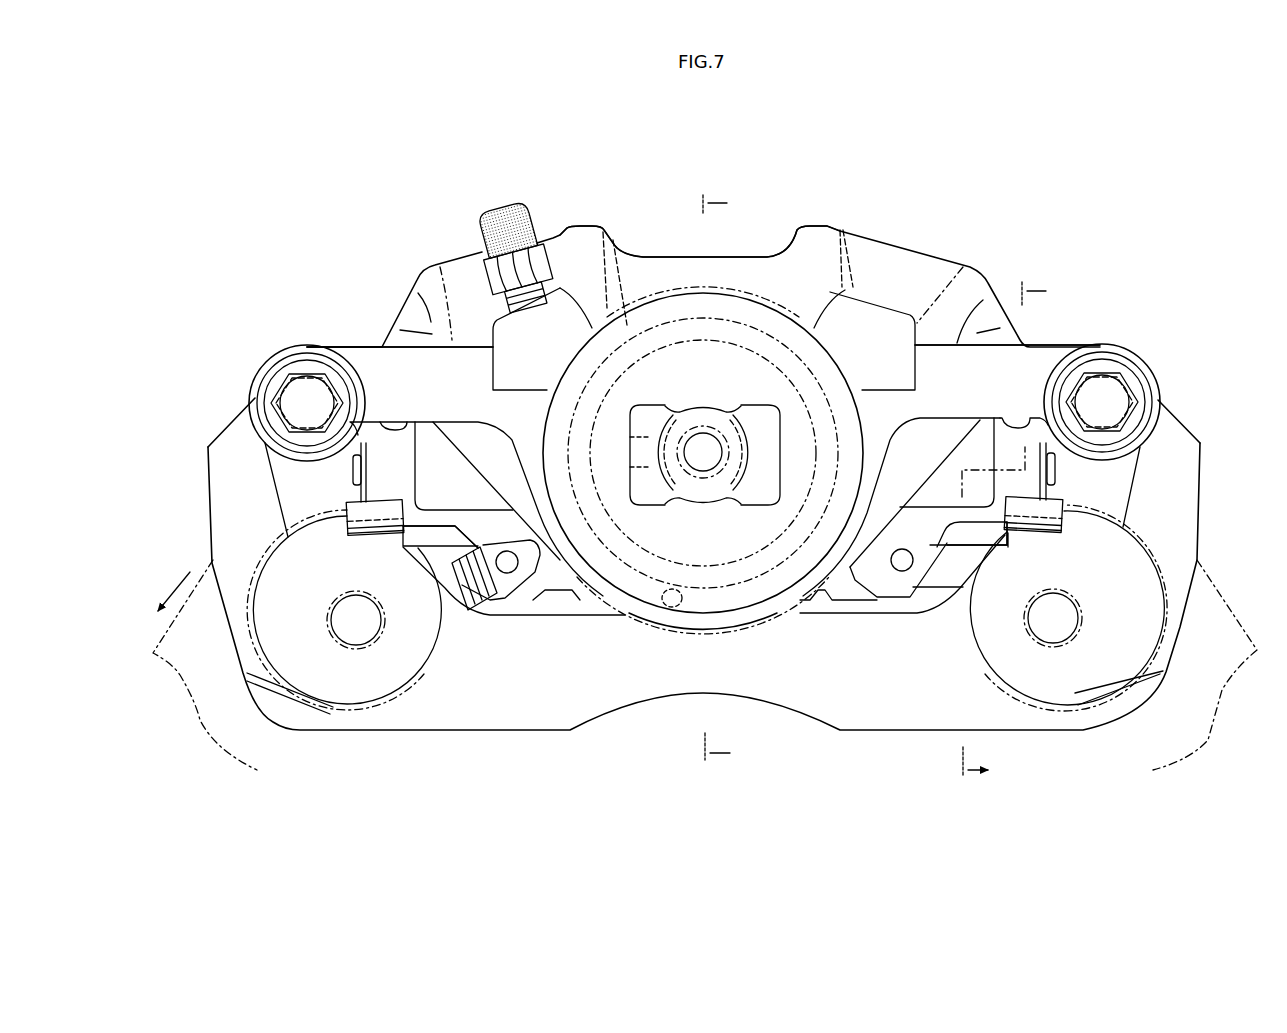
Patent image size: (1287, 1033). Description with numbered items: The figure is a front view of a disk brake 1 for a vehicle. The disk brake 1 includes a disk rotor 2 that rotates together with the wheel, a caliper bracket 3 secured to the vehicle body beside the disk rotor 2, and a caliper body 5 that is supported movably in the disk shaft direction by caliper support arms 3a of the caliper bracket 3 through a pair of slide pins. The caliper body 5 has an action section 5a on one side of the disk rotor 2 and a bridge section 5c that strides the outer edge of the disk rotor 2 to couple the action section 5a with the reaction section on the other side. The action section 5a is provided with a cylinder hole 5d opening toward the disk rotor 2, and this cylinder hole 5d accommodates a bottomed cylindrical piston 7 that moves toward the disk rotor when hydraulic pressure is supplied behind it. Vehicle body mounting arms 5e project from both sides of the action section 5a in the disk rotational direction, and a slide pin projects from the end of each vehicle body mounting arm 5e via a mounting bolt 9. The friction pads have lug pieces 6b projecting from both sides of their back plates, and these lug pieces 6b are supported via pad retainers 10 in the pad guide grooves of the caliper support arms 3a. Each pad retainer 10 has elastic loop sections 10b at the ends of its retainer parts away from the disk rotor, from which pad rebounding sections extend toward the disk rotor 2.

The disk brake 1 is at (714, 157).
The disk rotor 2 is at (1217, 583).
The caliper bracket 3 is at (702, 588).
The caliper support arm 3a is at (232, 432).
The caliper body 5 is at (703, 415).
The action section 5a is at (737, 606).
The bridge section 5c is at (580, 236).
The cylinder hole 5d is at (676, 604).
The vehicle body mounting arm 5e is at (372, 357).
The lug piece 6b is at (353, 483).
The piston 7 is at (706, 333).
The mounting bolt 9 is at (300, 385).
The pad retainer 10 is at (350, 541).
The elastic loop section 10b is at (383, 500).